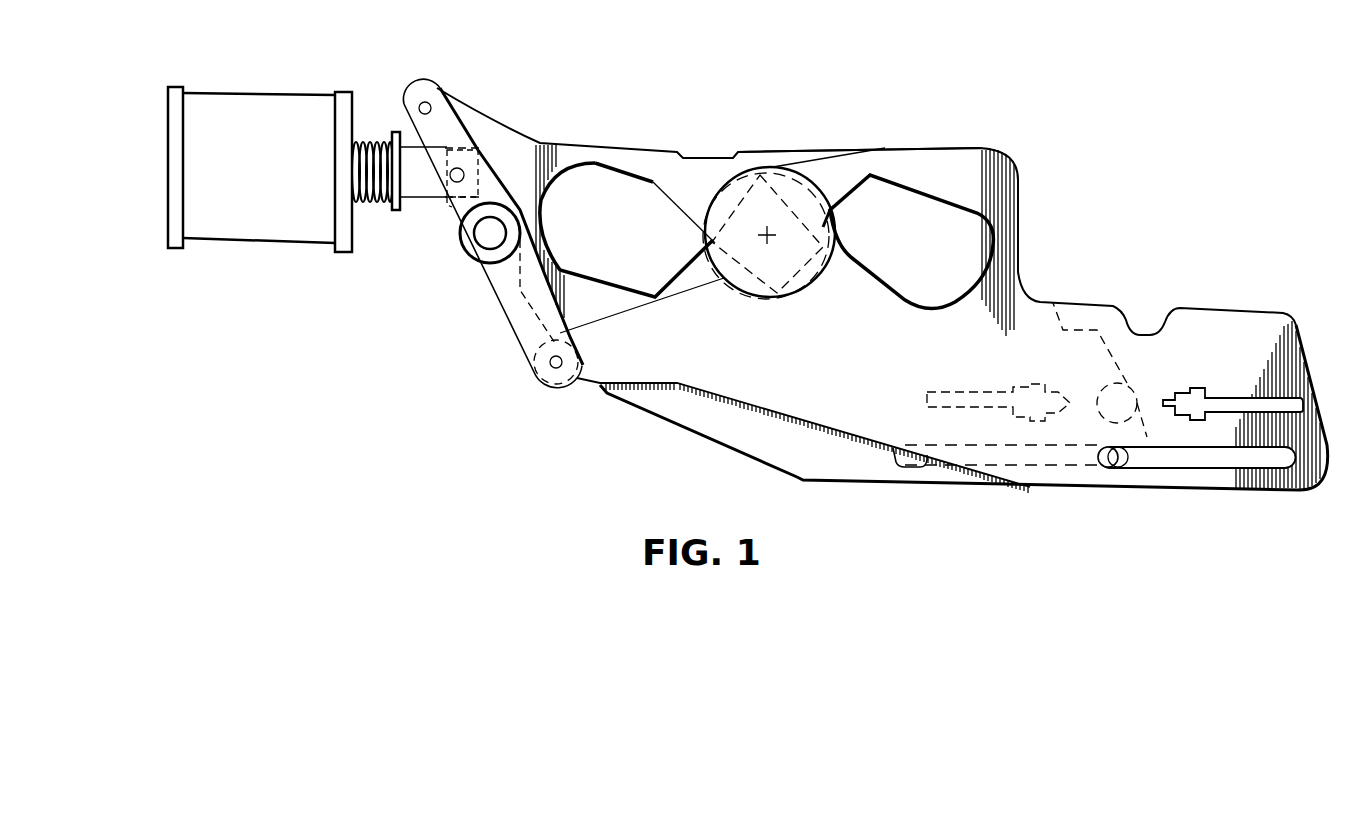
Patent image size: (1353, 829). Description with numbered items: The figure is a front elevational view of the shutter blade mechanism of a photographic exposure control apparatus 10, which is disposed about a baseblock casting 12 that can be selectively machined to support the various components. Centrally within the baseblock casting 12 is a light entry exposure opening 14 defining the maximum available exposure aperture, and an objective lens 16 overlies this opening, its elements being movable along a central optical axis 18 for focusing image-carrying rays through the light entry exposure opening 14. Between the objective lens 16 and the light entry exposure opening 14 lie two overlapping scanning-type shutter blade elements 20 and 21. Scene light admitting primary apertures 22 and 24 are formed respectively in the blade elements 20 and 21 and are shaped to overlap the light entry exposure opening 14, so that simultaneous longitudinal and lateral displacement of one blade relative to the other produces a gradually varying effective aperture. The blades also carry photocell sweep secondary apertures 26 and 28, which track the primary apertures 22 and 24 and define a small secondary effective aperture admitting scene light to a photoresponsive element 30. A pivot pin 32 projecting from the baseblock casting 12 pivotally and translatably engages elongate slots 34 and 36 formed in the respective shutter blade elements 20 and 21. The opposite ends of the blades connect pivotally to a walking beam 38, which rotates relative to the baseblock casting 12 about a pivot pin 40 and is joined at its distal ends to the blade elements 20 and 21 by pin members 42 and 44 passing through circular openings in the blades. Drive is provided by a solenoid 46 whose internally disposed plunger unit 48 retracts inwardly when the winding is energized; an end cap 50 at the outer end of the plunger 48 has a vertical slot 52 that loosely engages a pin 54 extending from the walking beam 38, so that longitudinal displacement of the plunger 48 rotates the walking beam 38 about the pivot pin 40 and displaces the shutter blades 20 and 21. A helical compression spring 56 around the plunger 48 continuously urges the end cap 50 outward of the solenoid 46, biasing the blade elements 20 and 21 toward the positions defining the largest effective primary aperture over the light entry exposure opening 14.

The photographic exposure control apparatus 10 is at (971, 117).
The baseblock casting 12 is at (1090, 219).
The light entry exposure opening 14 is at (811, 281).
The objective lens 16 is at (795, 172).
The central optical axis 18 is at (733, 277).
The shutter blade element 20 is at (562, 146).
The shutter blade element 21 is at (706, 401).
The scene light admitting primary aperture 22 is at (595, 276).
The scene light admitting primary aperture 24 is at (983, 288).
The photocell sweep secondary aperture 26 is at (1010, 405).
The photocell sweep secondary aperture 28 is at (1253, 413).
The photoresponsive element 30 is at (1127, 383).
The pivot pin 32 is at (1104, 466).
The elongate slot 34 is at (927, 466).
The elongate slot 36 is at (1178, 464).
The walking beam 38 is at (494, 300).
The pivot pin 40 is at (498, 219).
The pin member 42 is at (431, 104).
The pin member 44 is at (551, 368).
The solenoid 46 is at (241, 82).
The plunger unit 48 is at (416, 146).
The end cap 50 is at (462, 170).
The vertical slot 52 is at (452, 207).
The pin 54 is at (460, 177).
The helical compression spring 56 is at (360, 205).